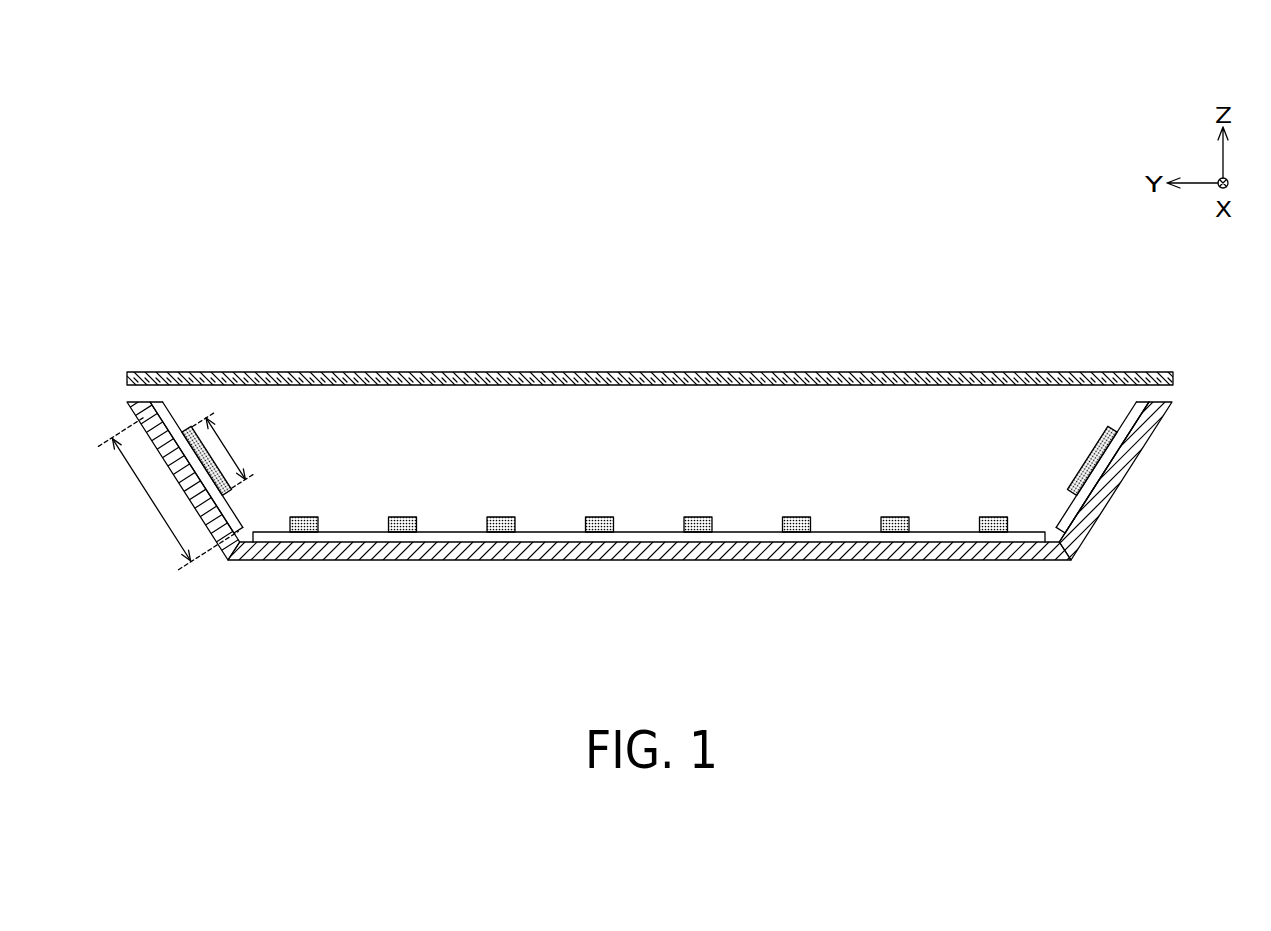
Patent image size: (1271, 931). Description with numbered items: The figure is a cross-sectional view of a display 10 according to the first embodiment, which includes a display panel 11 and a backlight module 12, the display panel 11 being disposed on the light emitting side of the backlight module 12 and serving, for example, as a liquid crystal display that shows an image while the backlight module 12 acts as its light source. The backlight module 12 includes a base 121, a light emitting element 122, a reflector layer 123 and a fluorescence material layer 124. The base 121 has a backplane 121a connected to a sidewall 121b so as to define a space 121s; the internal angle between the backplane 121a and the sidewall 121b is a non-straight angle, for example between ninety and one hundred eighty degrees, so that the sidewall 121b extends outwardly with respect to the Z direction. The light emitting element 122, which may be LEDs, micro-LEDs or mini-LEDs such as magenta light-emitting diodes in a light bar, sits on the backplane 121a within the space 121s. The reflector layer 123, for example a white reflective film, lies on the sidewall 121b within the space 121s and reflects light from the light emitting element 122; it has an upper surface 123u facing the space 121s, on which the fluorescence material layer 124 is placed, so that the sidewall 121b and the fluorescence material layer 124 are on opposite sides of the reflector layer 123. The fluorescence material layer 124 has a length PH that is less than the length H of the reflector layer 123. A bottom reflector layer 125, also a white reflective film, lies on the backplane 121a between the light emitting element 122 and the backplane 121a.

The display 10 is at (62, 265).
The display panel 11 is at (374, 383).
The backlight module 12 is at (660, 532).
The base 121 is at (699, 532).
The backplane 121a is at (1010, 560).
The sidewall 121b is at (229, 544).
The space 121s is at (1003, 428).
The light emitting element 122 is at (406, 517).
The reflector layer 123 is at (602, 507).
The upper surface 123u is at (246, 501).
The fluorescence material layer 124 is at (184, 431).
The bottom reflector layer 125 is at (845, 535).